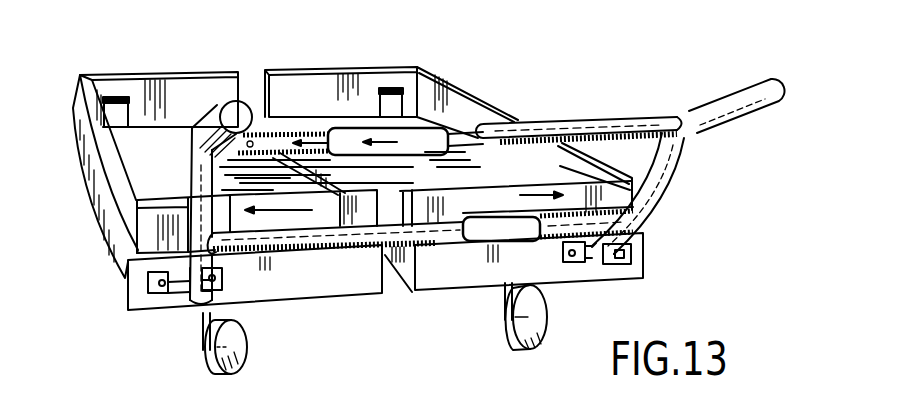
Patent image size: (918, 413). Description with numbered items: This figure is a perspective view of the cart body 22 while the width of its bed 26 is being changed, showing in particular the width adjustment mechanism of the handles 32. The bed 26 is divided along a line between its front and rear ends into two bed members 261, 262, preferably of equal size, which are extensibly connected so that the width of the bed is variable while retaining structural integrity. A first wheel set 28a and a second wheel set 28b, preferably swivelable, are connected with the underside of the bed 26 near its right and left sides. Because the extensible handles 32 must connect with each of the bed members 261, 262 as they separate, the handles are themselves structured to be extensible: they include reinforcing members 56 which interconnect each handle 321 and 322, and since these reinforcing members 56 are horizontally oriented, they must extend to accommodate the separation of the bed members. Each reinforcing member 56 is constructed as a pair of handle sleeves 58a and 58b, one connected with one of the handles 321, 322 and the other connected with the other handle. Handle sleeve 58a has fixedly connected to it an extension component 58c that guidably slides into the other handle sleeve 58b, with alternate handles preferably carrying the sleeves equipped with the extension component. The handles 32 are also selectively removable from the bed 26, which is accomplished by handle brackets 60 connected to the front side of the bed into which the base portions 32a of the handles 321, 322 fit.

The cart body 22 is at (102, 301).
The bed 26 is at (411, 294).
The bed member 261 is at (293, 290).
The bed member 262 is at (458, 285).
The first wheel set 28a is at (208, 372).
The second wheel set 28b is at (548, 323).
The extensible handles 32 is at (641, 112).
The handle 321 is at (222, 106).
The handle 322 is at (752, 122).
The base portions 32a is at (148, 273).
The handle brackets 60 is at (158, 293).
The reinforcing members 56 is at (492, 220).
The handle sleeve 58a is at (340, 128).
The handle sleeve 58b is at (587, 121).
The extension component 58c is at (446, 125).